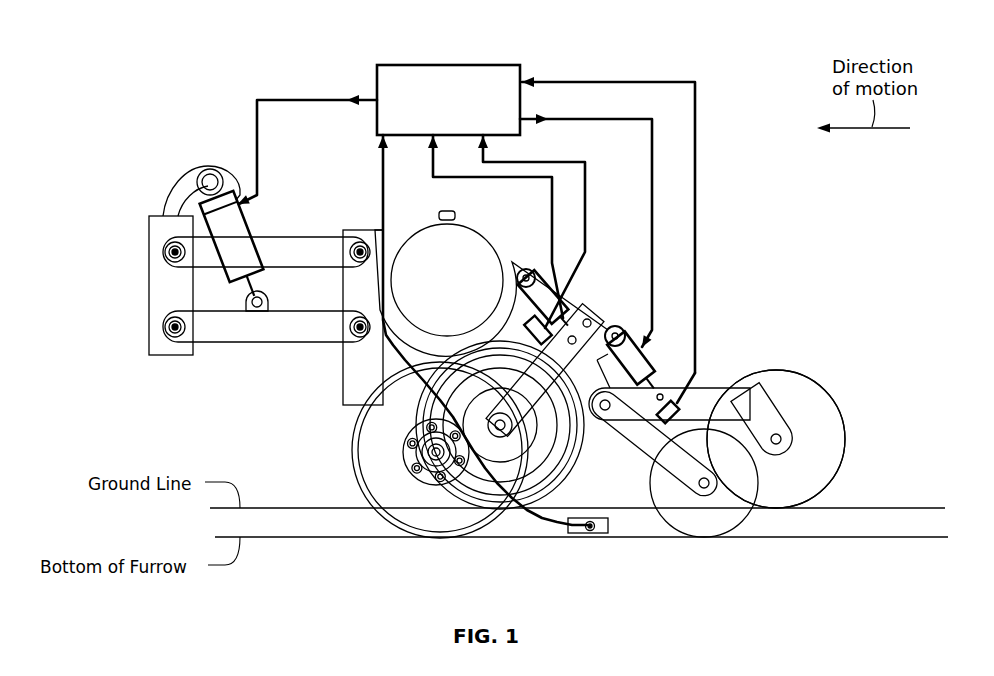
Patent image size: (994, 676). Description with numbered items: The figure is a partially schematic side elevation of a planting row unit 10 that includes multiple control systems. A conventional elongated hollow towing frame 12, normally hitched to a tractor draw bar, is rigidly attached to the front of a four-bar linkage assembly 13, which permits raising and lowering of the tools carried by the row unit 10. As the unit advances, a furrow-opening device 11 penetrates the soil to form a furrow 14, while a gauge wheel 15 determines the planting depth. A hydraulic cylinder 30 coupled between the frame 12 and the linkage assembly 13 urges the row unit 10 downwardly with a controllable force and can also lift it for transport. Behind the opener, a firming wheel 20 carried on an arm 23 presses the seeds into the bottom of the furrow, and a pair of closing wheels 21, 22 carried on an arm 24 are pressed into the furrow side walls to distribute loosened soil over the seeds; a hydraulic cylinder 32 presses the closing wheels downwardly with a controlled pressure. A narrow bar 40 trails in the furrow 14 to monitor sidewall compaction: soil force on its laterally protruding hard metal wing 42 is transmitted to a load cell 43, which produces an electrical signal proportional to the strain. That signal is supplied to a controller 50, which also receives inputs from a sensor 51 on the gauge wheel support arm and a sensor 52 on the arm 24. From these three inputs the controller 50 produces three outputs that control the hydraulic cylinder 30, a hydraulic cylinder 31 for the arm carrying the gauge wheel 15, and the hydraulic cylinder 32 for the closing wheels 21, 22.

The planting row unit 10 is at (103, 86).
The furrow-opening device 11 is at (347, 457).
The towing frame 12 is at (150, 242).
The four-bar linkage assembly 13 is at (325, 310).
The furrow 14 is at (275, 508).
The gauge wheel 15 is at (570, 477).
The firming wheel 20 is at (740, 521).
The closing wheel 21 is at (845, 432).
The closing wheel 22 is at (776, 439).
The arm 23 is at (640, 445).
The arm 24 is at (772, 410).
The hydraulic cylinder 30 is at (250, 226).
The hydraulic cylinder 31 is at (530, 270).
The hydraulic cylinder 32 is at (628, 325).
The narrow bar 40 is at (569, 555).
The hard metal wing 42 is at (573, 533).
The load cell 43 is at (592, 530).
The controller 50 is at (470, 65).
The sensor 51 is at (532, 322).
The sensor 52 is at (672, 405).